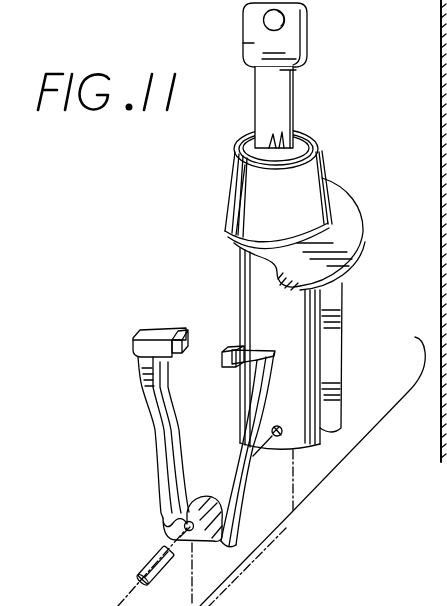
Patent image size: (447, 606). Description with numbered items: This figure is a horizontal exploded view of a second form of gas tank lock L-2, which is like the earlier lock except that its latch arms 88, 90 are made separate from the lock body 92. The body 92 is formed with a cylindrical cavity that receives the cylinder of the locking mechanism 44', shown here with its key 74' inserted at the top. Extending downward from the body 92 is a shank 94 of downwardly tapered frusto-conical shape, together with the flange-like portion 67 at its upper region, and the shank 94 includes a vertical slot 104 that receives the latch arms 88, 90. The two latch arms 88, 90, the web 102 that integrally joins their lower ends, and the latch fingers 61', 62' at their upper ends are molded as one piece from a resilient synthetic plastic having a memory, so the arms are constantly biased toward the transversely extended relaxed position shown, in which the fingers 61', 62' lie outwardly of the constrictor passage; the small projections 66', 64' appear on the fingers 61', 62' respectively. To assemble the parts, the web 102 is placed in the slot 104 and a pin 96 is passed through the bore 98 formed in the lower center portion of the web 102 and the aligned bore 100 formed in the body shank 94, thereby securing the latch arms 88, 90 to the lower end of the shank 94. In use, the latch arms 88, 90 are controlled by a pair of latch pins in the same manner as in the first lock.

The key 74' is at (298, 75).
The locking mechanism 44' is at (289, 177).
The lock body 92 is at (319, 173).
The gas tank lock L-2 is at (242, 178).
The flange 67 is at (348, 224).
The shank 94 is at (245, 267).
The vertical slot 104 is at (338, 288).
The projection 66' is at (157, 319).
The latch finger 61' is at (134, 348).
The projection 64' is at (222, 334).
The latch finger 62' is at (234, 374).
The latch arm 88 is at (153, 424).
The latch arm 90 is at (240, 469).
The bore 98 is at (185, 528).
The pin 96 is at (150, 562).
The bore 100 is at (284, 436).
The web 102 is at (213, 543).